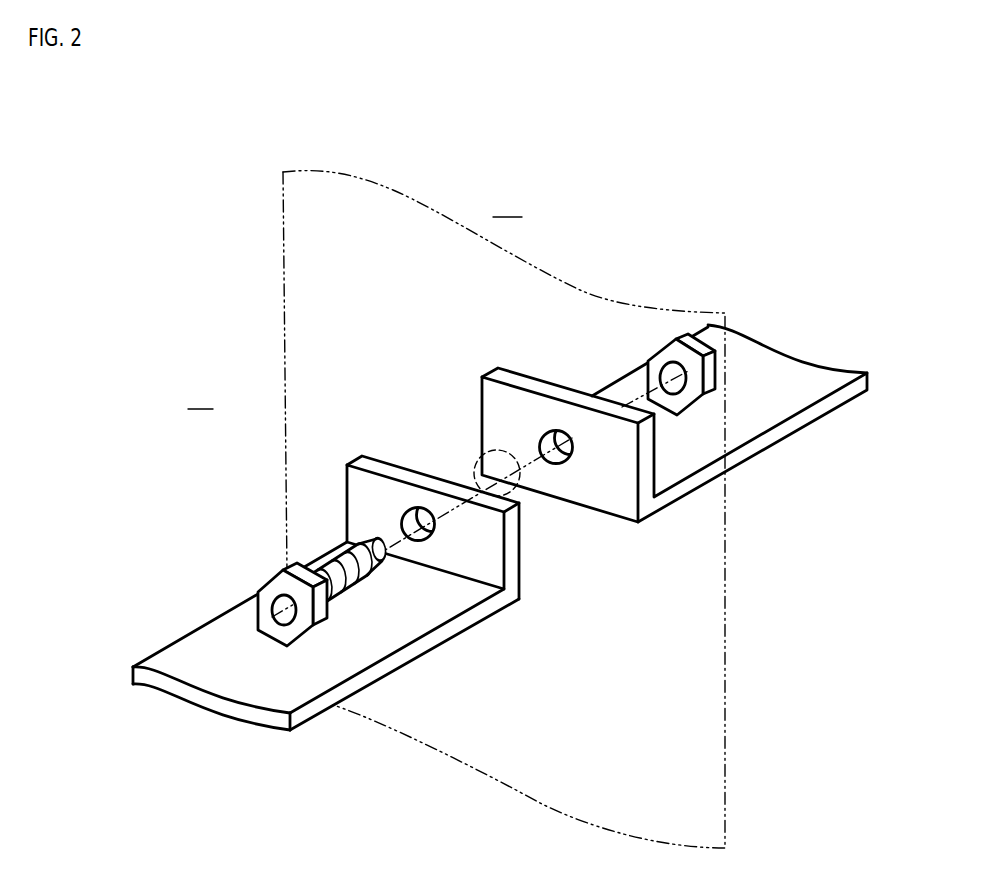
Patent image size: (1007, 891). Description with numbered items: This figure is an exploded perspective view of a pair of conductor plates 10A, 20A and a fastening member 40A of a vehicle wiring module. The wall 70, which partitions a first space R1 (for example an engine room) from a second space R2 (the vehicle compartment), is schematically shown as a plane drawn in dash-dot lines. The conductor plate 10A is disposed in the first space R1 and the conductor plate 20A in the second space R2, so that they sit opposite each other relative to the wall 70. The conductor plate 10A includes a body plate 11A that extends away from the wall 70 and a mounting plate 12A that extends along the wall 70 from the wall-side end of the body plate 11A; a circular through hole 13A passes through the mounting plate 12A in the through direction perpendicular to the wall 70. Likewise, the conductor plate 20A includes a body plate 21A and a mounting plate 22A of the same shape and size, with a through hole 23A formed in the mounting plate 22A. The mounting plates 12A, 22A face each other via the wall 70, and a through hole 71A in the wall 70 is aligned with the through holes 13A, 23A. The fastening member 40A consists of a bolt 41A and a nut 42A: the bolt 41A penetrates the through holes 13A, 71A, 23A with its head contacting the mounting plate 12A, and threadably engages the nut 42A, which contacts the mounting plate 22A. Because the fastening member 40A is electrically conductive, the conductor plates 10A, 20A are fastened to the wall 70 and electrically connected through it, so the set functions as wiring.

The wall 70 is at (338, 180).
The first space R1 is at (200, 397).
The second space R2 is at (507, 205).
The conductor plate 10A is at (358, 573).
The body plate 11A is at (398, 618).
The mounting plate 12A is at (481, 547).
The through hole 13A is at (404, 522).
The conductor plate 20A is at (674, 460).
The body plate 21A is at (695, 458).
The mounting plate 22A is at (615, 462).
The through hole 23A is at (544, 446).
The fastening member 40A is at (397, 542).
The bolt 41A is at (283, 579).
The nut 42A is at (677, 338).
The through hole 71A is at (478, 466).